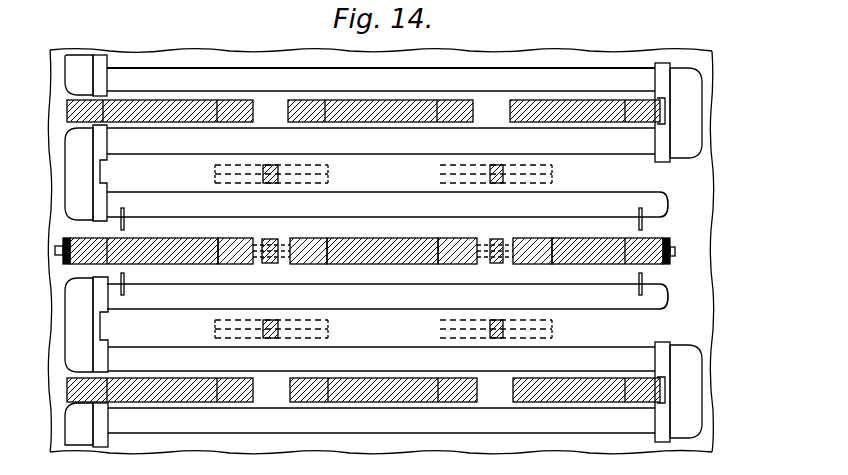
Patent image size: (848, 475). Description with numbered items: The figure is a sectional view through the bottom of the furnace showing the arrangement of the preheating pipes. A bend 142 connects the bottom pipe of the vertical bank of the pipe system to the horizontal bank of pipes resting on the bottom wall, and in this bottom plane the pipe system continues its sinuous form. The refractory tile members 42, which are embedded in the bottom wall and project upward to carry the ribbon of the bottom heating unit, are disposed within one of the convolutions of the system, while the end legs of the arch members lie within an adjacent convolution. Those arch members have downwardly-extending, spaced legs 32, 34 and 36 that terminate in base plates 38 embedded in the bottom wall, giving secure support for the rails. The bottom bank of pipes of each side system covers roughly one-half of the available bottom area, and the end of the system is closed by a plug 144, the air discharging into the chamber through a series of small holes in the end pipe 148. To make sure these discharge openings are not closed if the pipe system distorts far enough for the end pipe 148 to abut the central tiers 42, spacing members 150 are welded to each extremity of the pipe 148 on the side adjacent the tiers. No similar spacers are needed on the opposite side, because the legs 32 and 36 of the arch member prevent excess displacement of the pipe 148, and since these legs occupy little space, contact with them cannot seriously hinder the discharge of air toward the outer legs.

The leg 32 is at (282, 177).
The leg 34 is at (276, 243).
The leg 36 is at (330, 331).
The base plate 38 is at (553, 327).
The refractory tile member 42 is at (289, 111).
The bend 142 is at (68, 73).
The plug 144 is at (672, 201).
The end pipe 148 is at (387, 197).
The spacing member 150 is at (127, 223).